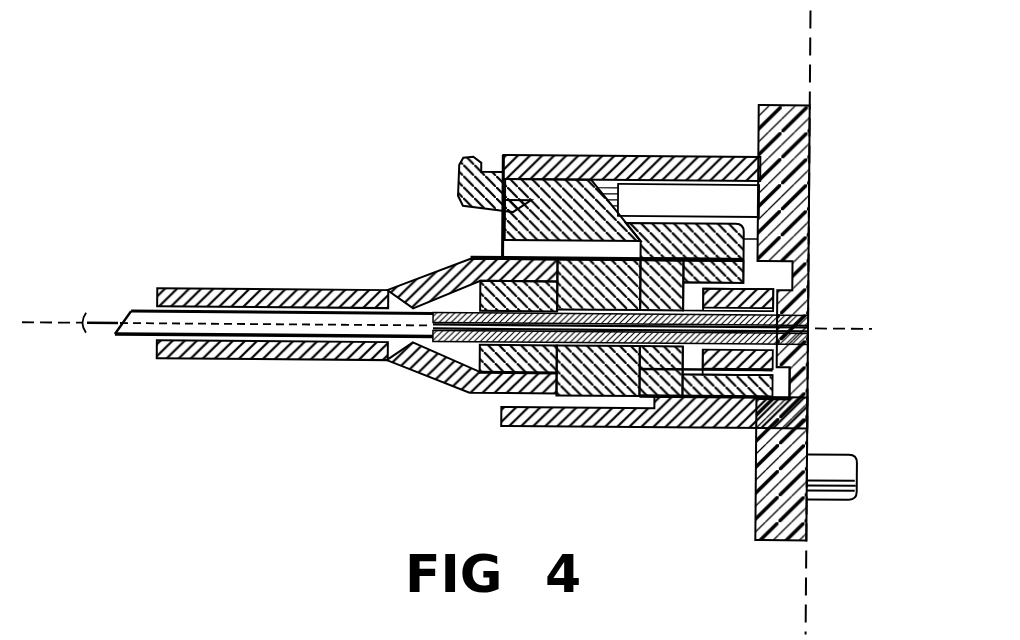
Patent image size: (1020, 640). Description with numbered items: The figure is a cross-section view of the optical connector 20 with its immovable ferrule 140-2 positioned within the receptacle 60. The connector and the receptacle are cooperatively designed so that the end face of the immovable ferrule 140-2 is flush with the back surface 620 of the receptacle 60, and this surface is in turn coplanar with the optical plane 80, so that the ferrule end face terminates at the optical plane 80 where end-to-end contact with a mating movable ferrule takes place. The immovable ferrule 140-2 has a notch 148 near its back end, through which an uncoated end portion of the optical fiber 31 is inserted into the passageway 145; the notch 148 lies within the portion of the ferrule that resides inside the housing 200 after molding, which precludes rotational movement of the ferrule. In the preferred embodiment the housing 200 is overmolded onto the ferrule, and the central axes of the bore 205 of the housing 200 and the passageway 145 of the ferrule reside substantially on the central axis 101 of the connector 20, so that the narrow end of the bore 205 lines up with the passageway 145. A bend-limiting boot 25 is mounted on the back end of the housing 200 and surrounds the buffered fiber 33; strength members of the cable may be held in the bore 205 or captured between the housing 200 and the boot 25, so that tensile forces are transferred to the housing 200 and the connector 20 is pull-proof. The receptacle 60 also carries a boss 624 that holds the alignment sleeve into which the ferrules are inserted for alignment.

The optical connector 20 is at (413, 389).
The bend-limiting boot 25 is at (425, 288).
The optical fiber 31 is at (88, 328).
The buffered fiber 33 is at (133, 312).
The receptacle 60 is at (757, 509).
The optical plane 80 is at (810, 51).
The central axis 101 is at (43, 325).
The immovable ferrule 140-2 is at (808, 300).
The passageway 145 is at (636, 290).
The notch 148 is at (650, 280).
The housing 200 is at (537, 355).
The bore 205 is at (620, 350).
The back surface 620 is at (808, 200).
The boss 624 is at (808, 393).